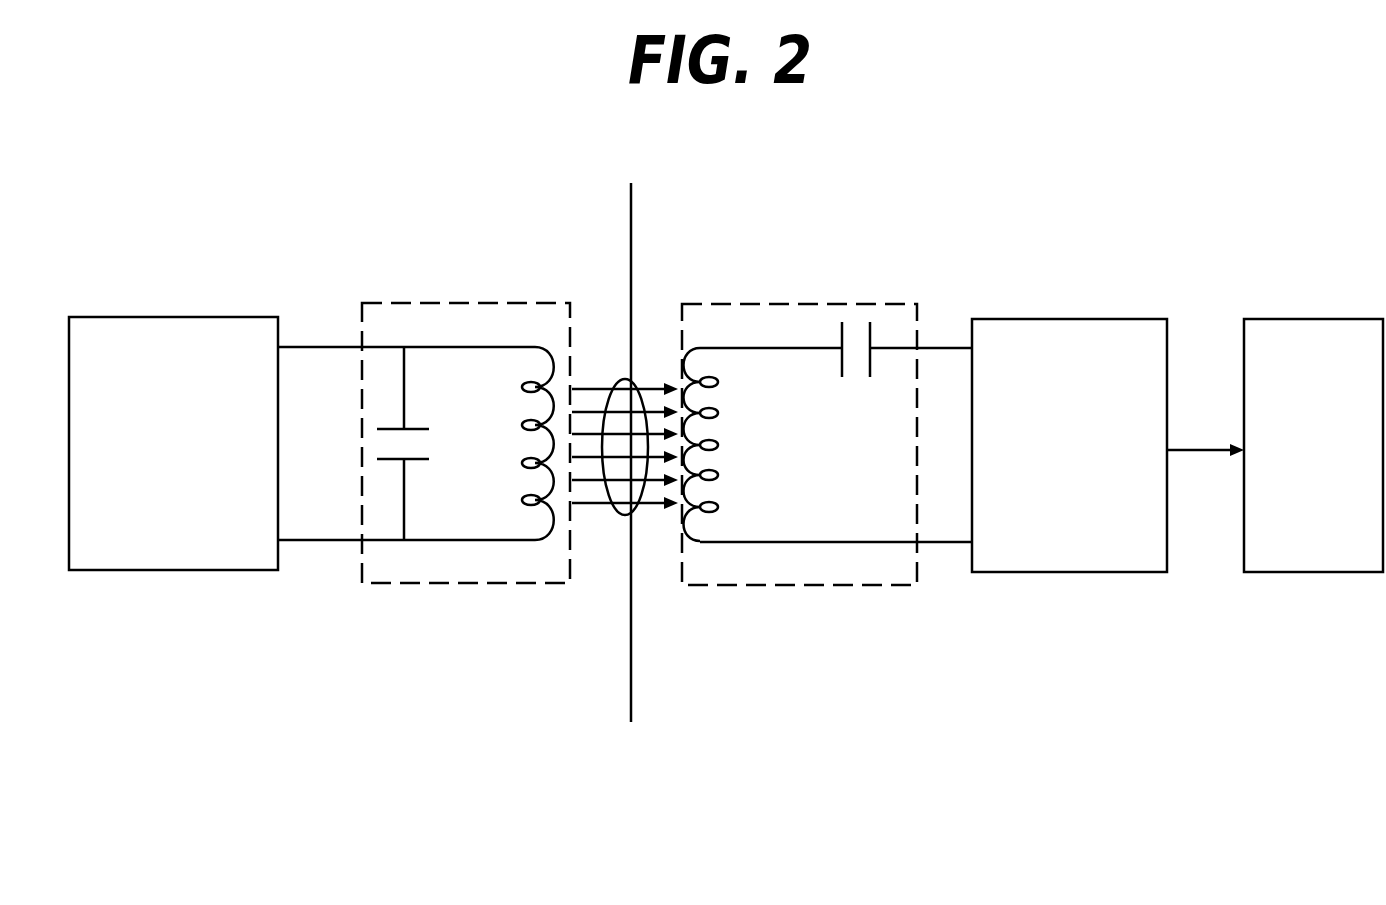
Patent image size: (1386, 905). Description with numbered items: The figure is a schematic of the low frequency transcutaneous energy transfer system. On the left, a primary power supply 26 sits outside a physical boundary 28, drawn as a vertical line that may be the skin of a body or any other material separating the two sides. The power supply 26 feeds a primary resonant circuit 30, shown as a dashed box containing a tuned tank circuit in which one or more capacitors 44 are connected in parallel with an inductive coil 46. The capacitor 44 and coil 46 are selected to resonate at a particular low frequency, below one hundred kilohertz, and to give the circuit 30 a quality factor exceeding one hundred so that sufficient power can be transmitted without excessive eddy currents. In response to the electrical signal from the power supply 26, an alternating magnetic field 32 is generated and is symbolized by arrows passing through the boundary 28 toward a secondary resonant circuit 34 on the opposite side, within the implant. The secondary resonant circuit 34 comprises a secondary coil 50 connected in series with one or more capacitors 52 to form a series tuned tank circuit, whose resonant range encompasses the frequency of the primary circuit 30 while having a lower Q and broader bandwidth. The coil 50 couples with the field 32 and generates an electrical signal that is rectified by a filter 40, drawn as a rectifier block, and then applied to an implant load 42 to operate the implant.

The power supply 26 is at (175, 317).
The physical boundary 28 is at (631, 247).
The primary resonant circuit 30 is at (452, 303).
The alternating magnetic field 32 is at (616, 533).
The secondary resonant circuit 34 is at (823, 587).
The filter 40 is at (1072, 319).
The implant load 42 is at (1315, 319).
The capacitor 44 is at (405, 427).
The inductive coil 46 is at (524, 462).
The secondary coil 50 is at (707, 445).
The capacitor 52 is at (840, 366).